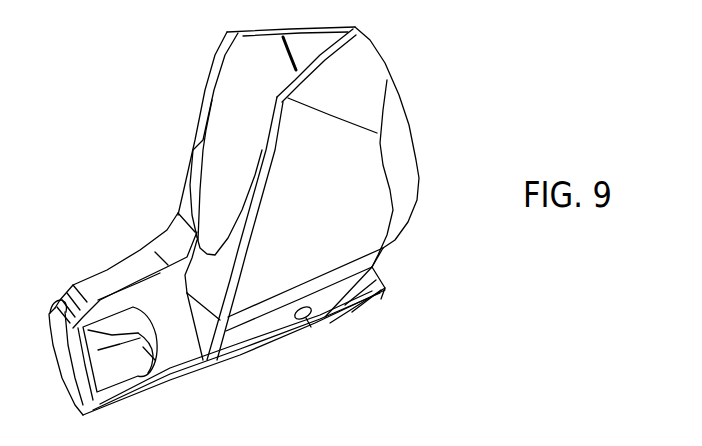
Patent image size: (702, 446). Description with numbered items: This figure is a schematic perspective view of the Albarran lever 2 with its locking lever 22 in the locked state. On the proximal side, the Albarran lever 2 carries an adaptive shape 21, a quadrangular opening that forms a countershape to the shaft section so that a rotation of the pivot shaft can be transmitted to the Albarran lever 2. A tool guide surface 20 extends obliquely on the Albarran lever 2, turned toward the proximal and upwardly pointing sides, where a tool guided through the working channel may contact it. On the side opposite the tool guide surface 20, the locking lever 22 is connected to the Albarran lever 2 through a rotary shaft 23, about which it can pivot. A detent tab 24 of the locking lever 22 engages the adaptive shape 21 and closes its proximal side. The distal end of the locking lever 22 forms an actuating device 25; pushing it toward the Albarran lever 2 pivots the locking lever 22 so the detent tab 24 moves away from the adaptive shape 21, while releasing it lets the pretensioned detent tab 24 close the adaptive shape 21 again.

The Albarran lever 2 is at (332, 167).
The tool guide surface 20 is at (235, 125).
The adaptive shape 21 is at (137, 310).
The locking lever 22 is at (192, 370).
The rotary shaft 23 is at (305, 318).
The detent tab 24 is at (65, 360).
The actuating device 25 is at (370, 293).